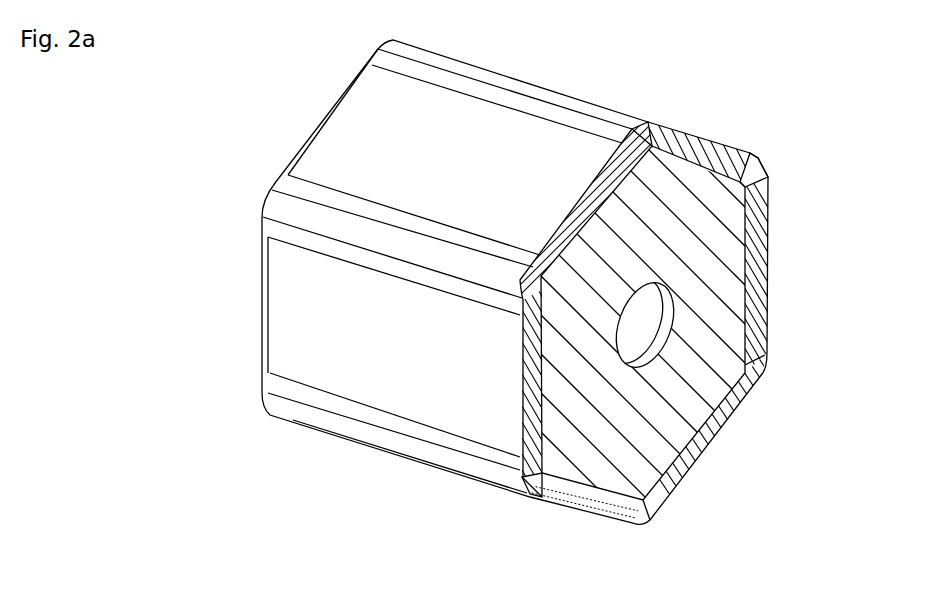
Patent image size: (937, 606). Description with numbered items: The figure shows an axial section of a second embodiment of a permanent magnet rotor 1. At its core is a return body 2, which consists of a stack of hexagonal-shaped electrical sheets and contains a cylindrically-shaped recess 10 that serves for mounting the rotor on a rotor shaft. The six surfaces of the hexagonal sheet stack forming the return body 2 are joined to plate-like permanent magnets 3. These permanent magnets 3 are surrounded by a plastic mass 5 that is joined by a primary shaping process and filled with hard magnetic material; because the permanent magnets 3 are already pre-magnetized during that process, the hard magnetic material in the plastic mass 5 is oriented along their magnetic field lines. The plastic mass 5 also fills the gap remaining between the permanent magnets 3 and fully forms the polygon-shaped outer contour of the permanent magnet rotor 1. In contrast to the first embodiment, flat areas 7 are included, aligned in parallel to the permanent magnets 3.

The permanent magnet rotor 1 is at (803, 92).
The return body 2 is at (707, 267).
The permanent magnets 3 is at (687, 153).
The plastic mass 5 is at (753, 183).
The flat areas 7 is at (399, 149).
The cylindrically-shaped recess 10 is at (643, 335).